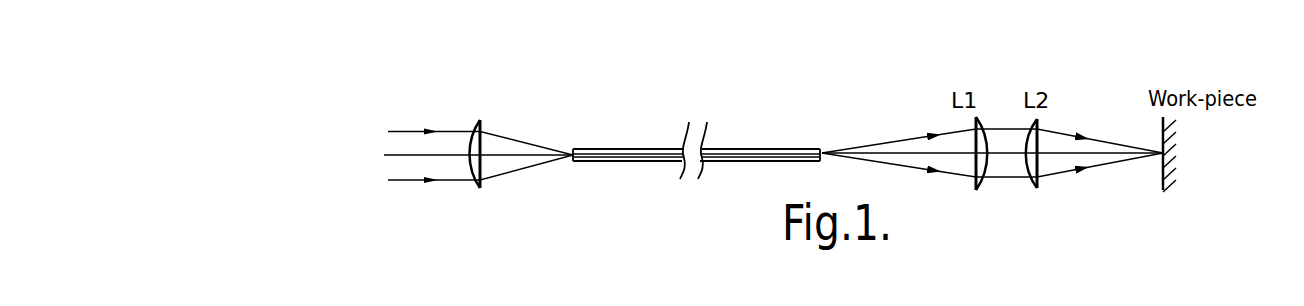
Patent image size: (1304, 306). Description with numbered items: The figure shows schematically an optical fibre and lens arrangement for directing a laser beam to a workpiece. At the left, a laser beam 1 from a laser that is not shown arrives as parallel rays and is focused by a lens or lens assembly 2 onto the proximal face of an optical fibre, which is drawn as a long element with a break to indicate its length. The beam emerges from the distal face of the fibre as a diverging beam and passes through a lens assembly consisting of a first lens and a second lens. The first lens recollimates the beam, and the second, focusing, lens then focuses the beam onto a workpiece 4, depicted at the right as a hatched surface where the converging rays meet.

The laser beam 1 is at (437, 180).
The lens or lens assembly 2 is at (484, 128).
The workpiece 4 is at (660, 161).